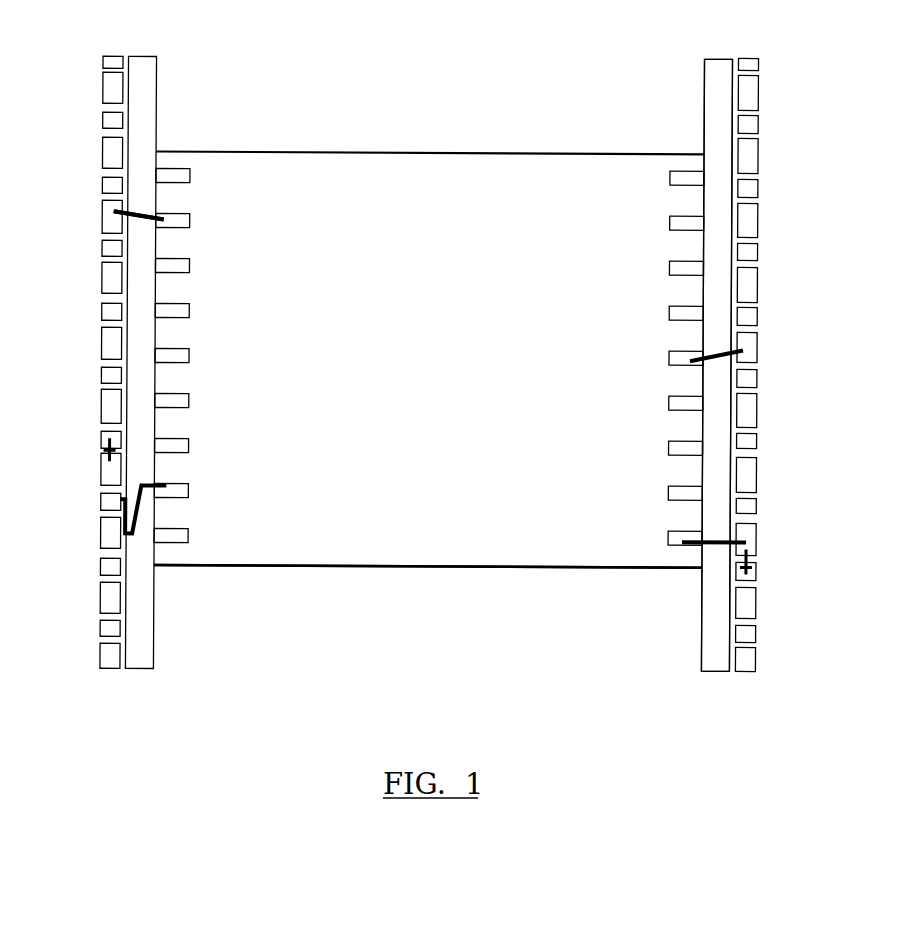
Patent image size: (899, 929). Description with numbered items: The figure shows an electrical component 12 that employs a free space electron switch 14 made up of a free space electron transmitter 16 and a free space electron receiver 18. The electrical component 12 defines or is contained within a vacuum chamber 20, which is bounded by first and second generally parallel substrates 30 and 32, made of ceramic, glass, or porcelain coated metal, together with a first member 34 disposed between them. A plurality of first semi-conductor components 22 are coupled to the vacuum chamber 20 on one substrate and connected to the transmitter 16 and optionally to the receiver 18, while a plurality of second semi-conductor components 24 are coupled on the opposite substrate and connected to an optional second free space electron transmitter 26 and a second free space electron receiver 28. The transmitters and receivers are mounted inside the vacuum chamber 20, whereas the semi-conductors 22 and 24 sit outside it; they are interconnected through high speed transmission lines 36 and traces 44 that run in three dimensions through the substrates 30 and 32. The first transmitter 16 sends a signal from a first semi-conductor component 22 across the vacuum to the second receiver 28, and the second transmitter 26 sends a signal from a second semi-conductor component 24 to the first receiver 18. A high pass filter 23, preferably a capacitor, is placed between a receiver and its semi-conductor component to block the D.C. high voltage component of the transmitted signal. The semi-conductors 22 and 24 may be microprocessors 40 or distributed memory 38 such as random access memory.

The electrical component 12 is at (502, 34).
The free space electron switch 14 is at (481, 160).
The free space electron transmitter 16 is at (190, 177).
The free space electron receiver 18 is at (190, 223).
The vacuum chamber 20 is at (437, 556).
The first semi-conductor component 22 is at (102, 433).
The high pass filter 23 is at (112, 467).
The second semi-conductor component 24 is at (752, 348).
The second free space electron transmitter 26 is at (666, 541).
The second free space electron receiver 28 is at (666, 493).
The first substrate 30 is at (762, 312).
The second substrate 32 is at (708, 648).
The first member 34 is at (367, 567).
The high speed transmission line 36 is at (103, 198).
The distributed memory 38 is at (102, 568).
The microprocessor 40 is at (112, 605).
The trace 44 is at (152, 216).